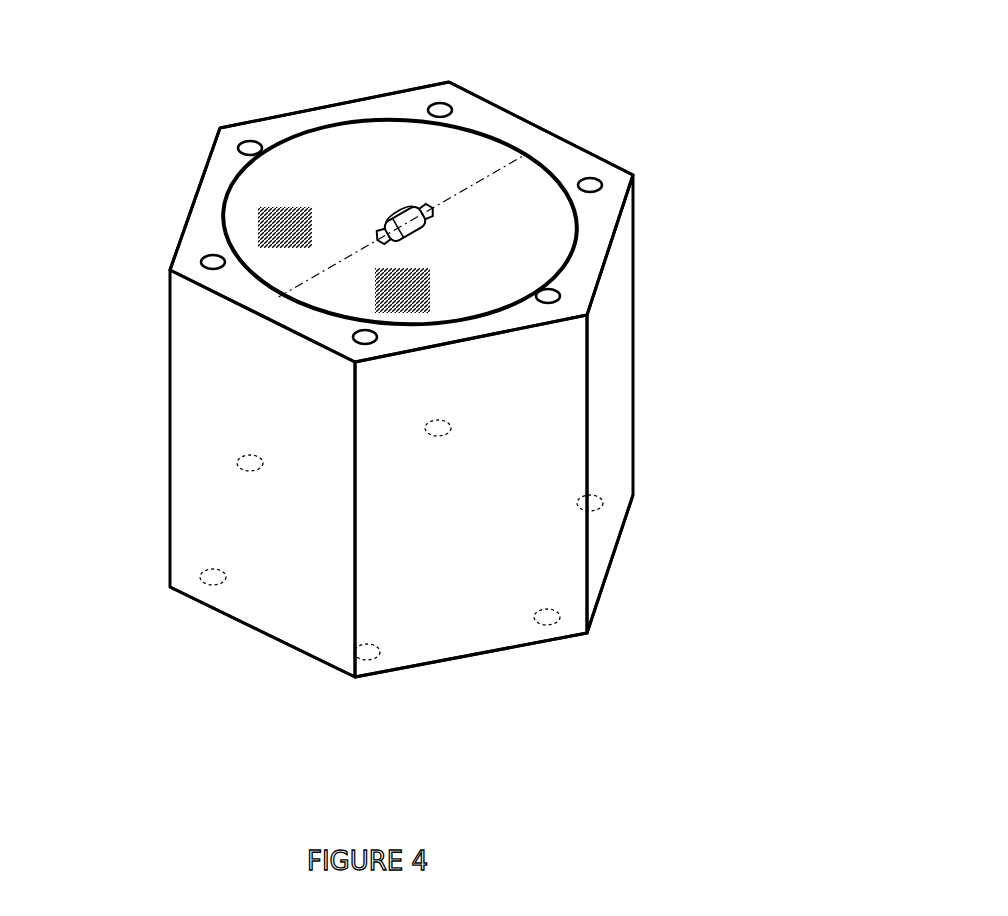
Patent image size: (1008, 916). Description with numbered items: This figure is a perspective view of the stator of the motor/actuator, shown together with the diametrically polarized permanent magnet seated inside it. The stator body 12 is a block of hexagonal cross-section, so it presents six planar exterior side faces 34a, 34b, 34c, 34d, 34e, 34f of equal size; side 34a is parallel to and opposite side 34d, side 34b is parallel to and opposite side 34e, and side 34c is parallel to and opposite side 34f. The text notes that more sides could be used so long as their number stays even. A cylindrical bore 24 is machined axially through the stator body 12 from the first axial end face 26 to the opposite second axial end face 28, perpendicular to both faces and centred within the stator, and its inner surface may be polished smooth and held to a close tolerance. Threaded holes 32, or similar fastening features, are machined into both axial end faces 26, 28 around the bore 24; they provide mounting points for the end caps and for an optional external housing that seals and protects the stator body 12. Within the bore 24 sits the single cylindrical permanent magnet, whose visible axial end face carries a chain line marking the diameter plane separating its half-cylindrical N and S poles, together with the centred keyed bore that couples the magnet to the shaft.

The stator body 12 is at (463, 372).
The cylindrical bore 24 is at (498, 130).
The first axial end face 26 is at (215, 178).
The second axial end face 28 is at (207, 610).
The threaded holes 32 is at (250, 141).
The side face 34a is at (193, 492).
The side face 34b is at (471, 496).
The side face 34c is at (617, 343).
The side face 34d is at (543, 132).
The side face 34e is at (330, 104).
The side face 34f is at (190, 195).